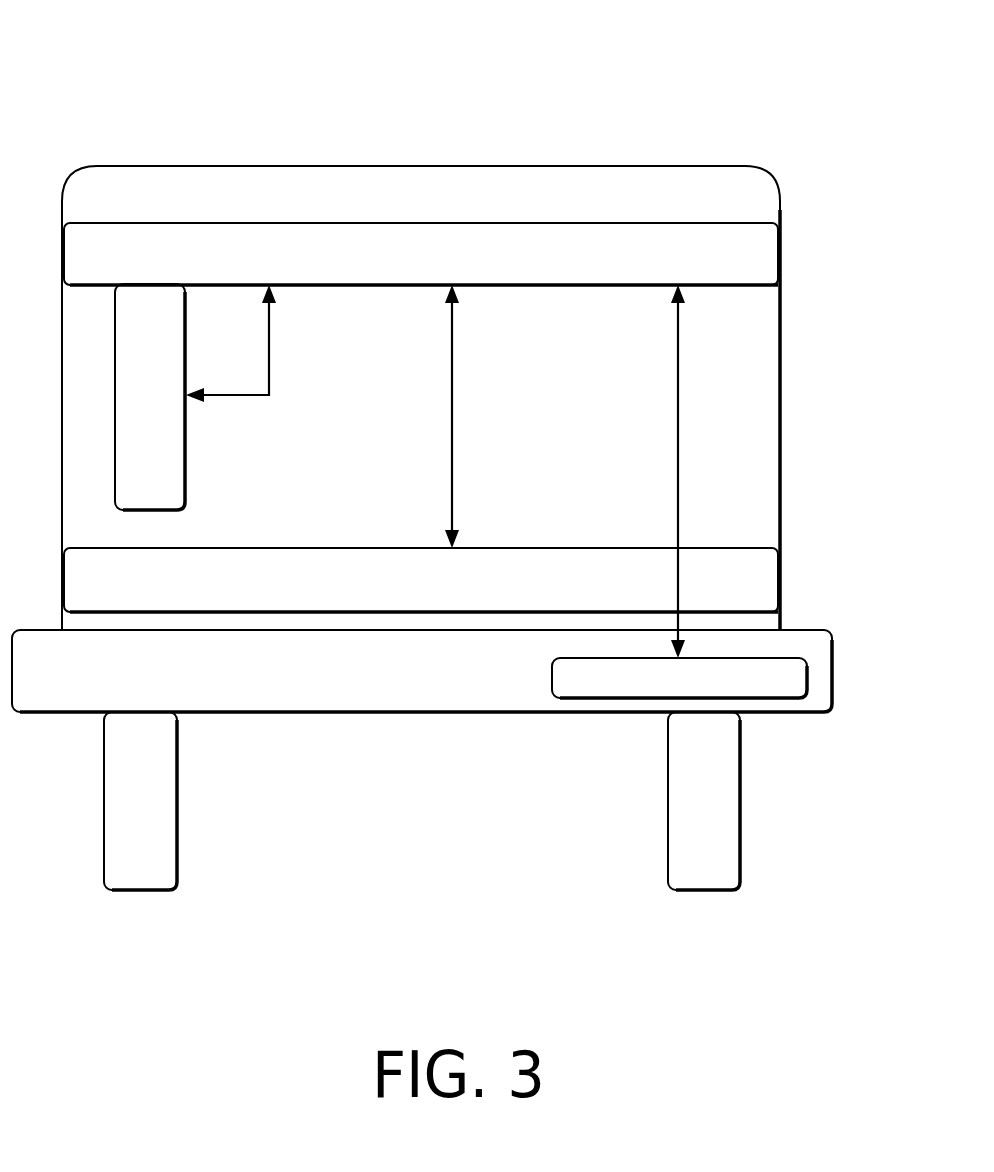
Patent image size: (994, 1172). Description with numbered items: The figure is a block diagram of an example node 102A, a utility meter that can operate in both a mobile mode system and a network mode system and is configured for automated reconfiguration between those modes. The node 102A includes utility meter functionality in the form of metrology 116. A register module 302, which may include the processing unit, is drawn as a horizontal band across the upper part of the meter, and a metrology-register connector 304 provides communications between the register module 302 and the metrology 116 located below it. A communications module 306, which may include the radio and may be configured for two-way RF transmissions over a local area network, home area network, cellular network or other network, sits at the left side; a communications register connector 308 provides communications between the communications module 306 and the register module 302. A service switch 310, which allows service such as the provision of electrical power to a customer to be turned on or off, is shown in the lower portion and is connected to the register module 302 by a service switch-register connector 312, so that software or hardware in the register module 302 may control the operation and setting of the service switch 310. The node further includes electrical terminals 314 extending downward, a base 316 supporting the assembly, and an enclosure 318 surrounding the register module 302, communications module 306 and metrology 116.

The node 102A is at (171, 57).
The communications module 306 is at (187, 340).
The enclosure 318 is at (548, 166).
The register module 302 is at (567, 271).
The communications register connector 308 is at (418, 506).
The metrology-register connector 304 is at (452, 453).
The metrology 116 is at (542, 594).
The service switch 310 is at (792, 689).
The service switch-register connector 312 is at (678, 422).
The base 316 is at (278, 712).
The electrical terminals 314 is at (668, 887).